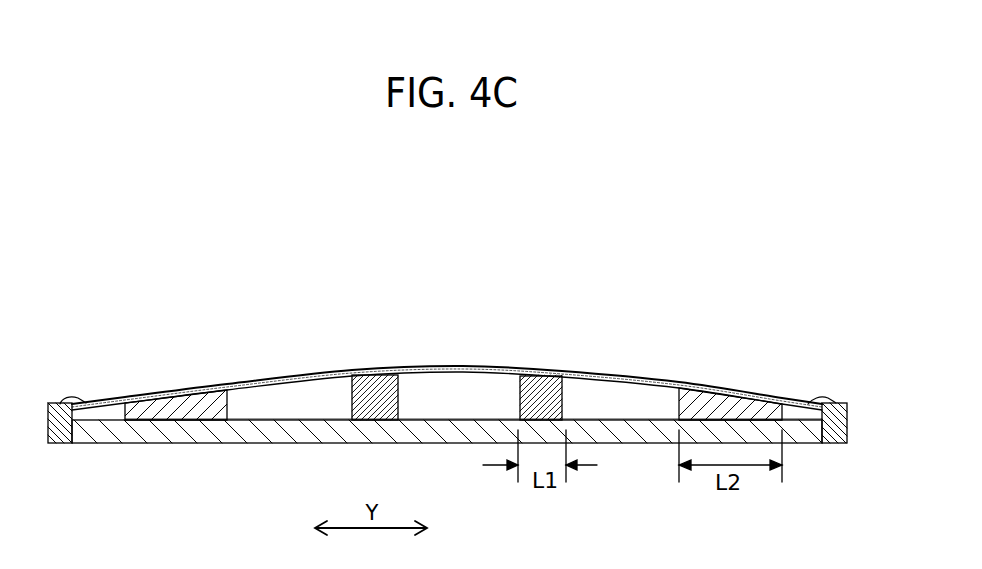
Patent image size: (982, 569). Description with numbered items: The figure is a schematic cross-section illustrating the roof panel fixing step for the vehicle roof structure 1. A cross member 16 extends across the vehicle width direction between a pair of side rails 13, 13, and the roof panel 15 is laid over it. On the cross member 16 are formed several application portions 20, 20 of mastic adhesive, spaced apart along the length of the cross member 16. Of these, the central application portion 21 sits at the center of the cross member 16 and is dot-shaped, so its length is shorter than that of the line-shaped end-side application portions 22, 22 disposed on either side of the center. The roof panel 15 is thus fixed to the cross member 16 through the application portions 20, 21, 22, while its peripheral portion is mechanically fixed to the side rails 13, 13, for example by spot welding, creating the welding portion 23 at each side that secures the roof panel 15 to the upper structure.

The vehicle roof structure 1 is at (664, 196).
The side rail 13 is at (63, 431).
The roof panel 15 is at (622, 373).
The cross member 16 is at (460, 434).
The application portion 20 is at (203, 414).
The central application portion 21 is at (381, 386).
The end-side application portion 22 is at (184, 408).
The welding portion 23 is at (72, 398).